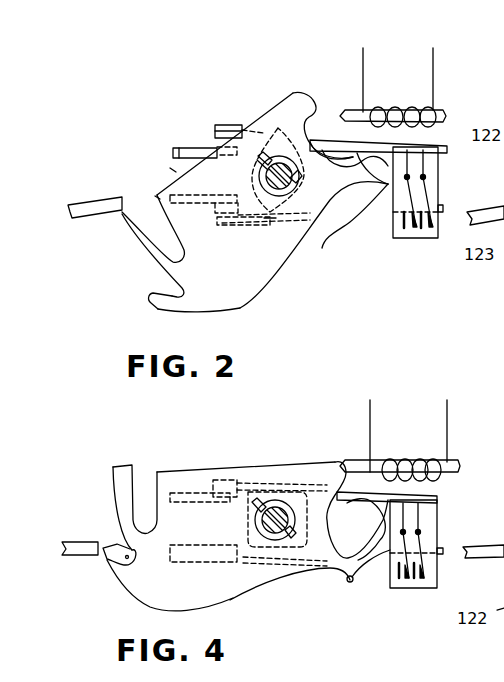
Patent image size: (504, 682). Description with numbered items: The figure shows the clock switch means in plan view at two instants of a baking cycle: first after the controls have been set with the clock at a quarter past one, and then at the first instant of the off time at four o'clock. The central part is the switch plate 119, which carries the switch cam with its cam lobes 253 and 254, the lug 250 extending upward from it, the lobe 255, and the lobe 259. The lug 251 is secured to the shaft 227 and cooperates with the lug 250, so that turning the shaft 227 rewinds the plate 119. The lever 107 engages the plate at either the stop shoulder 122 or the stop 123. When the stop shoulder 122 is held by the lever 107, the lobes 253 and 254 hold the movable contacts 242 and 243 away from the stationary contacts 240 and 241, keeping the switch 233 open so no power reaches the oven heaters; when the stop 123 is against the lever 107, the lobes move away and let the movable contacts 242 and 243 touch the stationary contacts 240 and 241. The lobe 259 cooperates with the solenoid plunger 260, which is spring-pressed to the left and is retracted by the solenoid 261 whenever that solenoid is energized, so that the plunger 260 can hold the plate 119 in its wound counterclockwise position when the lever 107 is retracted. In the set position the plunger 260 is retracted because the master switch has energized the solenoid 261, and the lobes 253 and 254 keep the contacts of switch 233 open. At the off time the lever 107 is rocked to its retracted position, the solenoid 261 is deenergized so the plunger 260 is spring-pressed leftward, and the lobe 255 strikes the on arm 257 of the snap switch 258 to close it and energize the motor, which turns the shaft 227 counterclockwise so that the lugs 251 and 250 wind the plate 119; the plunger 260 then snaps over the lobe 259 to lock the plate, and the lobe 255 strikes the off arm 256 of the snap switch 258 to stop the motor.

In FIG. 2, the lever 107 is at (84, 205).
In FIG. 4, the lever 107 is at (83, 532).
In FIG. 2, the switch plate 119 is at (158, 199).
In FIG. 2, the stop shoulder 122 is at (122, 227).
In FIG. 4, the stop shoulder 122 is at (120, 477).
In FIG. 2, the stop 123 is at (147, 296).
In FIG. 4, the stop 123 is at (108, 557).
In FIG. 4, the shaft 227 is at (270, 510).
In FIG. 2, the switch 233 is at (173, 170).
In FIG. 2, the stationary contact 240 is at (179, 148).
In FIG. 2, the stationary contact 241 is at (197, 197).
In FIG. 2, the movable contact 242 is at (232, 128).
In FIG. 2, the movable contact 243 is at (225, 226).
In FIG. 4, the lug 250 is at (288, 534).
In FIG. 4, the lug 251 is at (248, 510).
In FIG. 2, the cam lobe 253 is at (290, 147).
In FIG. 2, the cam lobe 254 is at (270, 218).
In FIG. 2, the lobe 255 is at (314, 245).
In FIG. 4, the lobe 255 is at (290, 585).
In FIG. 2, the off arm 256 is at (355, 157).
In FIG. 4, the off arm 256 is at (362, 500).
In FIG. 2, the on arm 257 is at (347, 227).
In FIG. 4, the on arm 257 is at (350, 582).
In FIG. 2, the snap switch 258 is at (433, 168).
In FIG. 4, the snap switch 258 is at (433, 517).
In FIG. 2, the lobe 259 is at (298, 95).
In FIG. 4, the lobe 259 is at (333, 472).
In FIG. 2, the solenoid plunger 260 is at (350, 114).
In FIG. 4, the solenoid plunger 260 is at (375, 463).
In FIG. 2, the solenoid 261 is at (396, 112).
In FIG. 4, the solenoid 261 is at (417, 457).